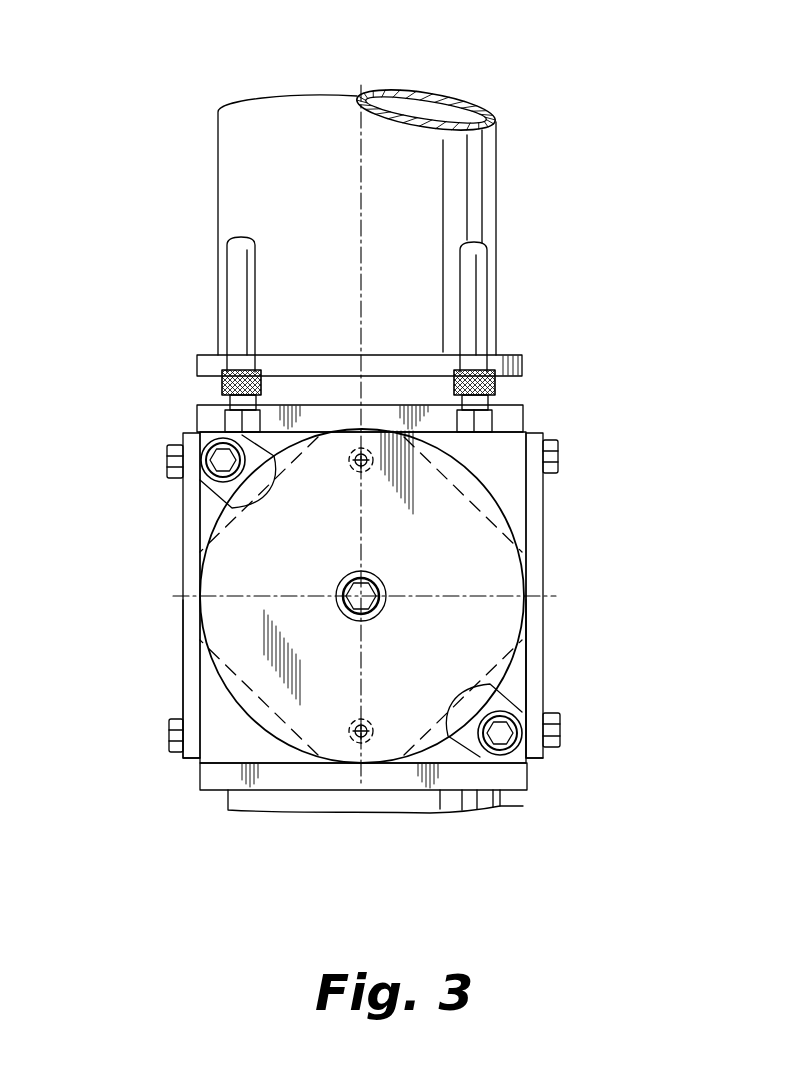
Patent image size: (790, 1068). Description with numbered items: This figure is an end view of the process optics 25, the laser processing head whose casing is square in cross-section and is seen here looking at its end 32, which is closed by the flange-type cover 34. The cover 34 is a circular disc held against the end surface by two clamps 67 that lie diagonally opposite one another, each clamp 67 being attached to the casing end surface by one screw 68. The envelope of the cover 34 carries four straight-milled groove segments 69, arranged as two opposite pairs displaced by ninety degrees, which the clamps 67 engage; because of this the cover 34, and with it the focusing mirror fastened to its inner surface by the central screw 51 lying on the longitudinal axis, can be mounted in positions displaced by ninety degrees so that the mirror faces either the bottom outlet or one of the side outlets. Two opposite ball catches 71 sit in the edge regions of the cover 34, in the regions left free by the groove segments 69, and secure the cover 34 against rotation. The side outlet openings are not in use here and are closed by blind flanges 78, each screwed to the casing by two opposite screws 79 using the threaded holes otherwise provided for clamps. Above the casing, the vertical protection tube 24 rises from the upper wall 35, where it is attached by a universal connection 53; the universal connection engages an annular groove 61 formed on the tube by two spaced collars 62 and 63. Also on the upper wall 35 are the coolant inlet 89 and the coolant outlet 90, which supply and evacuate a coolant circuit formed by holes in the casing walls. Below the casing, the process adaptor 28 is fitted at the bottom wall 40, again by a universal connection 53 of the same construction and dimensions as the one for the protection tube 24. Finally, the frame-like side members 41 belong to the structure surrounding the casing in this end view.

The protection tube 24 is at (382, 153).
The coolant inlet 89 is at (238, 277).
The coolant outlet 90 is at (473, 313).
The collar 63 is at (212, 363).
The collar 62 is at (203, 420).
The upper wall 35 is at (528, 410).
The cover 34 is at (325, 710).
The blind flange 78 is at (190, 532).
The side frame member 41 is at (198, 655).
The screw 79 is at (166, 462).
The annular groove 61 is at (275, 717).
The groove segment 69 is at (200, 548).
The screw 51 is at (370, 580).
The ball catch 71 is at (352, 463).
The screw 68 is at (205, 445).
The clamp 67 is at (228, 496).
The end 32 is at (220, 738).
The process adaptor 28 is at (427, 797).
The bottom wall 40 is at (523, 808).
The universal connection 53 is at (540, 380).
The process optics 25 is at (168, 628).